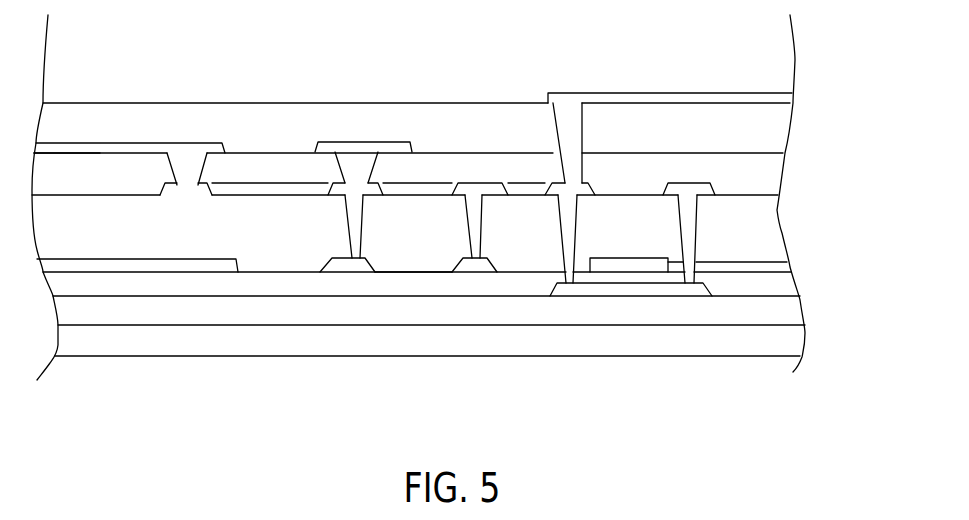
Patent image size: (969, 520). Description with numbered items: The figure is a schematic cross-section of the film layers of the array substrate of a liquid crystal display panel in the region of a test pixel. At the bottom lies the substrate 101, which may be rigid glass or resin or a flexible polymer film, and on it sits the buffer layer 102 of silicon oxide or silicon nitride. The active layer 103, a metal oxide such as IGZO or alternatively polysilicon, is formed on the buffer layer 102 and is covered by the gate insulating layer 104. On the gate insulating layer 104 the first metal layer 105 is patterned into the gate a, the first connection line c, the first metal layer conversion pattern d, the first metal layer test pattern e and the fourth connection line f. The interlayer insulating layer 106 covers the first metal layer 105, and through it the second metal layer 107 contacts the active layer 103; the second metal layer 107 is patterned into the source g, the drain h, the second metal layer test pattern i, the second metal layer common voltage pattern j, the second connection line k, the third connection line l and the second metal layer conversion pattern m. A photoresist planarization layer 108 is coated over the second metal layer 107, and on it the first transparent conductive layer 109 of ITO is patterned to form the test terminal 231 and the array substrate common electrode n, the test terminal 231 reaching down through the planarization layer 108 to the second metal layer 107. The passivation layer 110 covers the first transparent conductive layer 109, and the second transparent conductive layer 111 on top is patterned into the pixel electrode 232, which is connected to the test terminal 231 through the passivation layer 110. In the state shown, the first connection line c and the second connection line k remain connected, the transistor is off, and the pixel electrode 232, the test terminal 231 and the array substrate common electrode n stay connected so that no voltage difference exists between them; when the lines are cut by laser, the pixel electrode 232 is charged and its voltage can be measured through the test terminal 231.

The substrate 101 is at (793, 349).
The buffer layer 102 is at (793, 316).
The active layer 103 is at (704, 286).
The gate insulating layer 104 is at (792, 290).
The first metal layer 105 is at (752, 261).
The interlayer insulating layer 106 is at (750, 222).
The second metal layer 107 is at (507, 106).
The planarization layer 108 is at (752, 167).
The first transparent conductive layer 109 is at (52, 147).
The passivation layer 110 is at (745, 125).
The second transparent conductive layer 111 is at (771, 98).
The test terminal 231 is at (365, 147).
The pixel electrode 232 is at (715, 102).
The gate a is at (610, 265).
The first connection line c is at (80, 264).
The first metal layer conversion pattern d is at (477, 265).
The first metal layer test pattern e is at (342, 265).
The fourth connection line f is at (428, 265).
The source g is at (692, 192).
The drain h is at (571, 190).
The second metal layer test pattern i is at (353, 193).
The second metal layer common voltage pattern j is at (190, 196).
The second connection line k is at (277, 196).
The third connection line l is at (530, 192).
The second metal layer conversion pattern m is at (473, 193).
The array substrate common electrode n is at (93, 150).